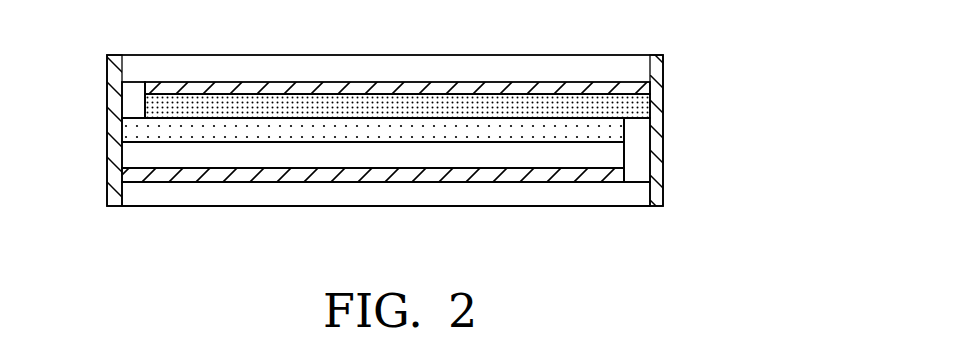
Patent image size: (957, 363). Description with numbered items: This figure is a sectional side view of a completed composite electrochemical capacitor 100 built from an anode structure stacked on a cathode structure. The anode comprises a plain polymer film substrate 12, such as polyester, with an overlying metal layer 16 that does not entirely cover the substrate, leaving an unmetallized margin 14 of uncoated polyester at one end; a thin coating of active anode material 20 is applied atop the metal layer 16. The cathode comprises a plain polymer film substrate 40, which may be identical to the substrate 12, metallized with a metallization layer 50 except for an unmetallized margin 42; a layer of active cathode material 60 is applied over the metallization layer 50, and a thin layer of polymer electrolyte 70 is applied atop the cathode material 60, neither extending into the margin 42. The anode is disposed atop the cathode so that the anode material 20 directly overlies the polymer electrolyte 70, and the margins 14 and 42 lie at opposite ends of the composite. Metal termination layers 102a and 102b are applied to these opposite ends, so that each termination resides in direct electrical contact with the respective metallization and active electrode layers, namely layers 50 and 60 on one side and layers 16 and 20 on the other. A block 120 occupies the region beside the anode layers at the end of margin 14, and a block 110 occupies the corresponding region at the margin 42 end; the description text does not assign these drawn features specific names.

The plain polymer film substrate 12 is at (547, 65).
The unmetallized margin 14 is at (126, 73).
The metal layer 16 is at (196, 88).
The active anode material 20 is at (370, 98).
The spacer block 120 is at (132, 105).
The polymer electrolyte 70 is at (132, 132).
The active cathode material 60 is at (420, 157).
The metallization layer 50 is at (333, 173).
The side spacer 110 is at (636, 153).
The plain polymer film substrate 40 is at (538, 197).
The unmetallized margin 42 is at (638, 180).
The metal layer 102a is at (110, 167).
The metal layer 102b is at (655, 102).
The device assembly 100 is at (668, 265).